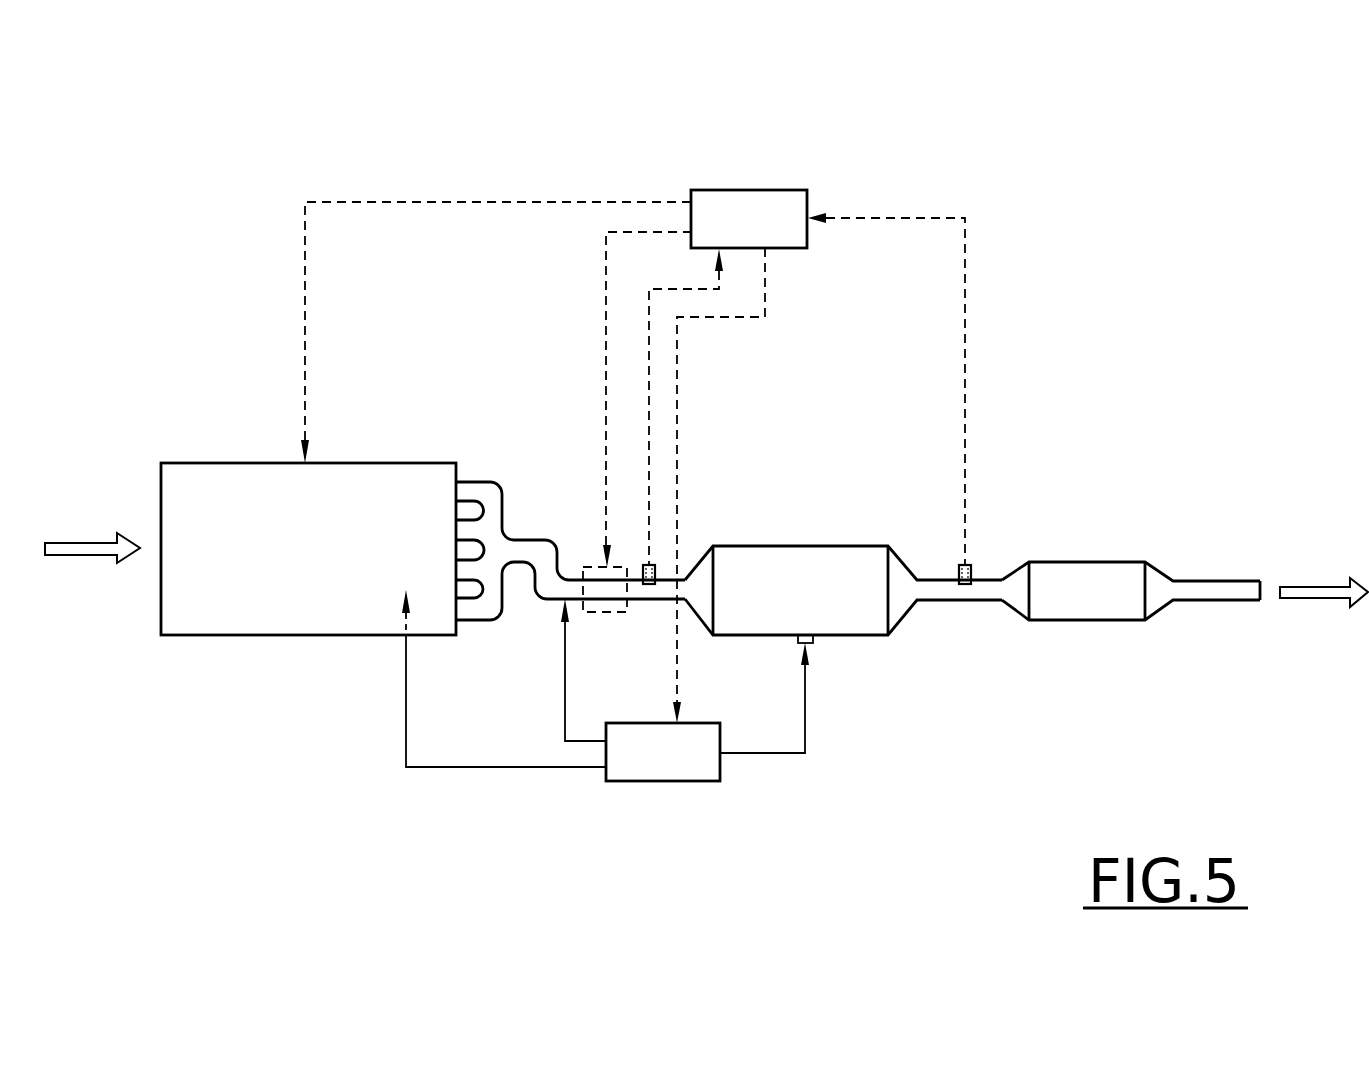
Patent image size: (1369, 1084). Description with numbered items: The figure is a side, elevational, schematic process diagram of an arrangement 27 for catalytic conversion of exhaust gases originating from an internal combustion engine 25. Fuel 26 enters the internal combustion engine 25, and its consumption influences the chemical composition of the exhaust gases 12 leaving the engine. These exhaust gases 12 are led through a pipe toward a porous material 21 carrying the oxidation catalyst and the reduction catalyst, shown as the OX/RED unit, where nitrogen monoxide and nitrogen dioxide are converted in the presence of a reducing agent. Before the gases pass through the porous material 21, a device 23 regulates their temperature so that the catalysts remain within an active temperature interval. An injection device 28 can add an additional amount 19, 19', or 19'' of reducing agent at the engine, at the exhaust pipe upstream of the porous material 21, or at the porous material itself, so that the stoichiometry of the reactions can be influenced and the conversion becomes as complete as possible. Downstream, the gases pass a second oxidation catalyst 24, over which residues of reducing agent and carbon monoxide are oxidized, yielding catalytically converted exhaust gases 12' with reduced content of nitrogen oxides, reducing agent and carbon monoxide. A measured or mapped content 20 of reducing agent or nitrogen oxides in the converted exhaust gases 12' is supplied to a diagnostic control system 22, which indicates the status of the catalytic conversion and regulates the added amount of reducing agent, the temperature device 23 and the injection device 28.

The exhaust gases 12 is at (558, 479).
The catalytically converted exhaust gases 12' is at (1324, 516).
The additional amount of reducing agent 19 is at (439, 733).
The additional amount of reducing agent 19' is at (519, 738).
The additional amount of reducing agent 19'' is at (781, 760).
The measured content 20 is at (968, 447).
The porous material 21 is at (825, 546).
The diagnostic control system 22 is at (780, 190).
The temperature regulating device 23 is at (585, 567).
The second oxidation catalyst 24 is at (1102, 562).
The internal combustion engine 25 is at (203, 463).
The fuel 26 is at (75, 547).
The arrangement 27 is at (1123, 319).
The injection device 28 is at (637, 774).